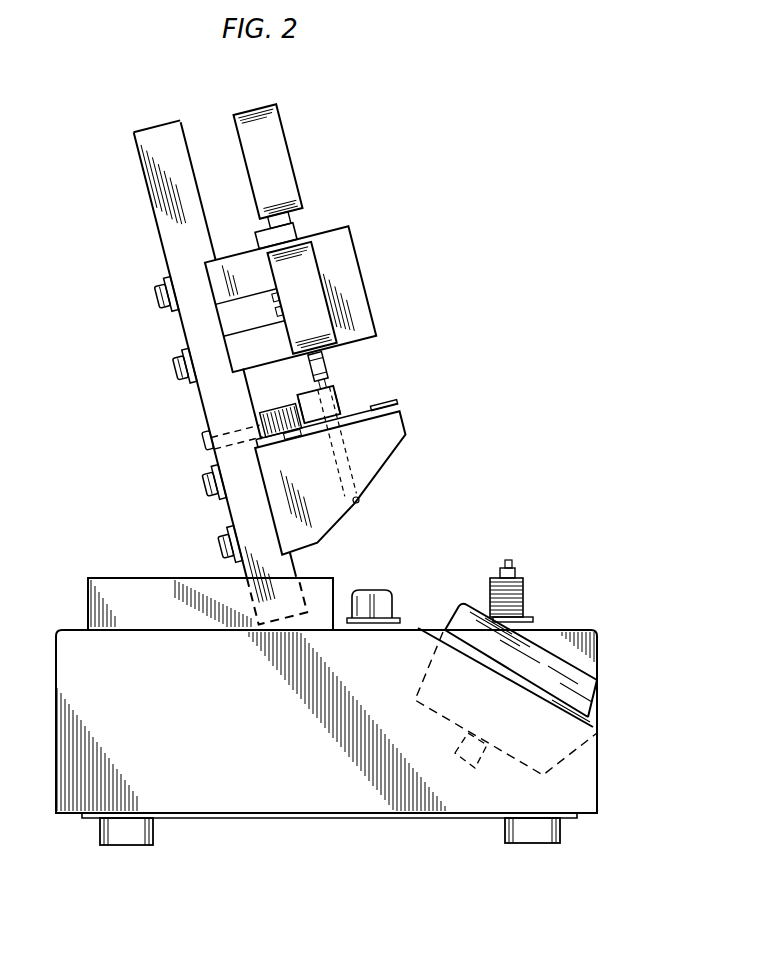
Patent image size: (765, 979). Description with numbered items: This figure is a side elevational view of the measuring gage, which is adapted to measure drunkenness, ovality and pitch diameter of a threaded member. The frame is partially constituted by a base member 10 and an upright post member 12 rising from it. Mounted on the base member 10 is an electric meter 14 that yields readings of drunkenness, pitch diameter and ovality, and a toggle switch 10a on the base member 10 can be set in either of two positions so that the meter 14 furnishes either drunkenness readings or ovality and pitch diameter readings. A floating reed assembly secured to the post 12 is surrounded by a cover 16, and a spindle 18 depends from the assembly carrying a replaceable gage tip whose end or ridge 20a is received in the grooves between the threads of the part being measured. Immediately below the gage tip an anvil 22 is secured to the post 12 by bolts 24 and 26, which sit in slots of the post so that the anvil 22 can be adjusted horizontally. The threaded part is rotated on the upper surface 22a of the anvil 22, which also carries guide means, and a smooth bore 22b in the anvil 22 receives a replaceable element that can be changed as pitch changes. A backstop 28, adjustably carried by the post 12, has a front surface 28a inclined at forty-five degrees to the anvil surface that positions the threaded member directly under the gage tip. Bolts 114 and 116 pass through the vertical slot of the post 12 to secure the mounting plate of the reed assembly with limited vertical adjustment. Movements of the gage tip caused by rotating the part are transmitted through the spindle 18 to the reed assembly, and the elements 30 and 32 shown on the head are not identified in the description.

The base member 10 is at (100, 723).
The toggle switch 10a is at (372, 590).
The post member 12 is at (215, 405).
The electric meter 14 is at (568, 686).
The cover 16 is at (335, 240).
The spindle 18 is at (320, 358).
The ridge of gage tip 20a is at (338, 413).
The anvil 22 is at (385, 440).
The upper surface of anvil 22a is at (388, 405).
The smooth bore 22b is at (359, 498).
The bolt 24 is at (207, 478).
The bolt 26 is at (228, 548).
The backstop 28 is at (330, 386).
The front surface of backstop 28a is at (300, 408).
The motor 30 is at (270, 158).
The housing cover 32 is at (312, 291).
The bolt 114 is at (155, 292).
The bolt 116 is at (180, 367).